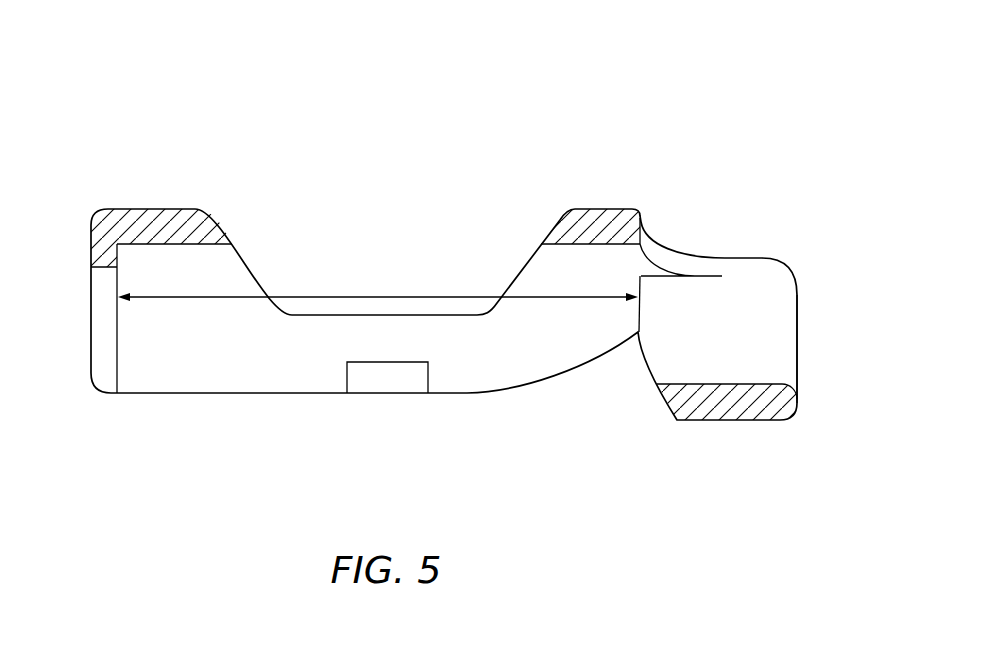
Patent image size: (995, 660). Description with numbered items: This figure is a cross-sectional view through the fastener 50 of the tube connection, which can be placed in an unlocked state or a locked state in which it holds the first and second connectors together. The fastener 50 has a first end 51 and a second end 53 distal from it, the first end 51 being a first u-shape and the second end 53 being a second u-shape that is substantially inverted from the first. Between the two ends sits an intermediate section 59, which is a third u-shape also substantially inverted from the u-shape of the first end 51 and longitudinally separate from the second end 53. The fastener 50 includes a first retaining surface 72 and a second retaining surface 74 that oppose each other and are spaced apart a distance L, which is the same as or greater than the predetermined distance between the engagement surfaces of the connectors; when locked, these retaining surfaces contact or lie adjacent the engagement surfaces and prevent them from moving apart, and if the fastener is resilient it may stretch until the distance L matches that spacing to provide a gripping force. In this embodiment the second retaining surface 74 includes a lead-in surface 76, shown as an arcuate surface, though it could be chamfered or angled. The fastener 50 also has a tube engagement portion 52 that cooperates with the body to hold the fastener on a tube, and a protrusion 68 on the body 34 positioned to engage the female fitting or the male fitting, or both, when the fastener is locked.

The fastener 50 is at (190, 126).
The first end 51 is at (810, 381).
The tube engagement portion 52 is at (746, 422).
The second end 53 is at (86, 373).
The body 34 is at (205, 368).
The protrusion 68 is at (402, 380).
The intermediate section 59 is at (535, 234).
The first retaining surface 72 is at (128, 259).
The second retaining surface 74 is at (628, 285).
The lead-in surface 76 is at (636, 377).
The distance L is at (352, 296).